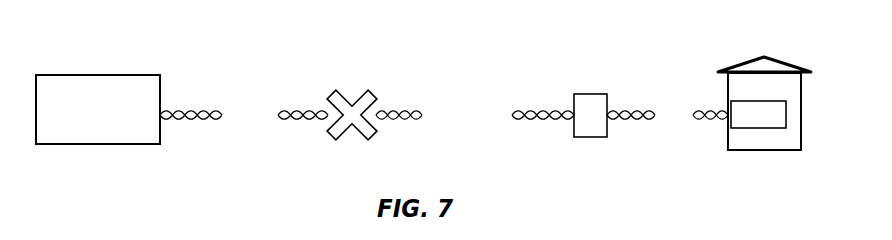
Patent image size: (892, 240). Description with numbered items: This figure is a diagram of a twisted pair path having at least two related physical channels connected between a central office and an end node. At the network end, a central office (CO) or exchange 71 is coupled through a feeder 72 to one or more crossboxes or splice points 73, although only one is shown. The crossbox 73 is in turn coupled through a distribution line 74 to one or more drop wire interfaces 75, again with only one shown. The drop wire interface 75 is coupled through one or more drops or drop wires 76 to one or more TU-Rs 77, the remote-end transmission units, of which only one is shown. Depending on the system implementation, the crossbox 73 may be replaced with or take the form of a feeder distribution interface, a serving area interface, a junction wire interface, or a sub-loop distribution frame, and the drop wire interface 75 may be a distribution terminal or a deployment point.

The central office or exchange 71 is at (103, 145).
The feeder 72 is at (255, 111).
The crossbox or splice point 73 is at (357, 92).
The distribution line 74 is at (546, 111).
The drop wire interface 75 is at (600, 94).
The drop or drop wire 76 is at (679, 112).
The TU-R 77 is at (770, 151).